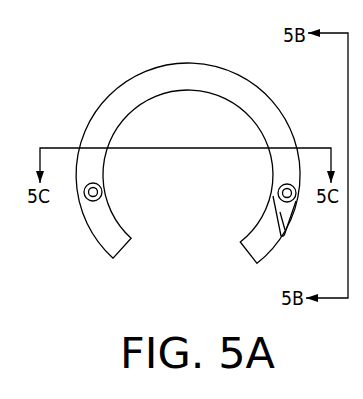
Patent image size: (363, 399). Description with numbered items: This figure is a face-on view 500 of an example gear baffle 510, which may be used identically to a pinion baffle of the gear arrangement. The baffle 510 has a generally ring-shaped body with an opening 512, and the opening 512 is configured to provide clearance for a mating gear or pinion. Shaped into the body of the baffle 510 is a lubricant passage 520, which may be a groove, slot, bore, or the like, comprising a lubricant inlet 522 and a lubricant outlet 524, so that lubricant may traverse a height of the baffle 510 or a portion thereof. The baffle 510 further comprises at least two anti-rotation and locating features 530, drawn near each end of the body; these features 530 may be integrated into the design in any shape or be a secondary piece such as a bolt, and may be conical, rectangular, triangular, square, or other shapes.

The face-on view 500 is at (86, 54).
The baffle 510 is at (87, 128).
The opening 512 is at (182, 266).
The lubricant passage 520 is at (270, 214).
The lubricant inlet 522 is at (289, 218).
The lubricant outlet 524 is at (279, 189).
The anti-rotation and locating feature 530 is at (92, 202).